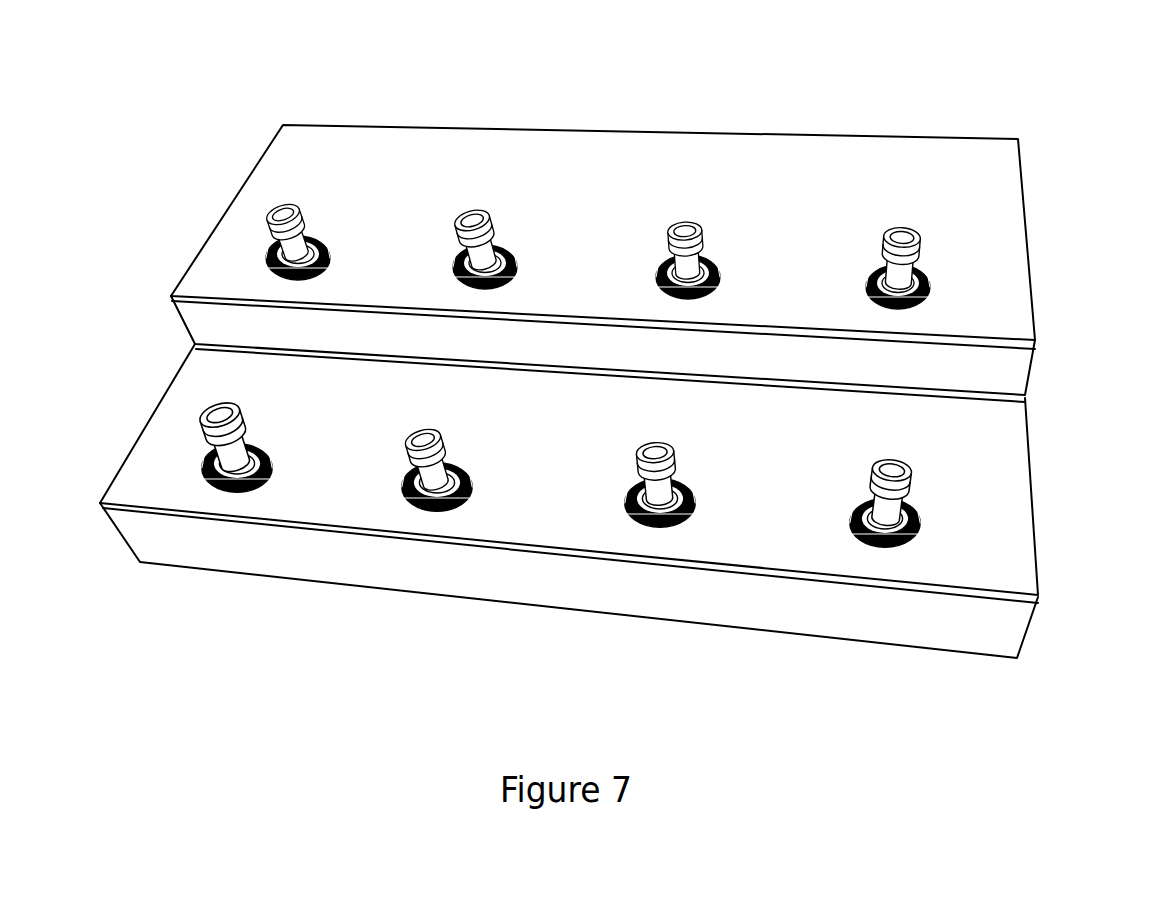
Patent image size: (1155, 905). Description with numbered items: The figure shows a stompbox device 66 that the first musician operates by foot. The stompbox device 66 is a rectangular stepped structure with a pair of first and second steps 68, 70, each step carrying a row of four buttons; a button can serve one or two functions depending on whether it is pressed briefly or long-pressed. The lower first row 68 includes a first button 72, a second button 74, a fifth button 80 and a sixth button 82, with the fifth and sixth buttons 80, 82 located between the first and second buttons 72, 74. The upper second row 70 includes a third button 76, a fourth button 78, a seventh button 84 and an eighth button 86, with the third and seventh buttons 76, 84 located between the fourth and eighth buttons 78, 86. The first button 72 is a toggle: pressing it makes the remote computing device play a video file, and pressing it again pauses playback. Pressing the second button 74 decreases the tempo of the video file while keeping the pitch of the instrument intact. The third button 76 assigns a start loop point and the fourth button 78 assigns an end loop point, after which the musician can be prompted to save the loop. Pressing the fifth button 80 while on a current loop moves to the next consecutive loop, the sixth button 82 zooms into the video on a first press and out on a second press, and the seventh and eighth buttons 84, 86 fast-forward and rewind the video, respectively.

The stompbox device 66 is at (1056, 116).
The first step 68 is at (932, 502).
The second step 70 is at (944, 270).
The first button 72 is at (218, 413).
The second button 74 is at (870, 537).
The third button 76 is at (688, 223).
The fourth button 78 is at (902, 228).
The fifth button 80 is at (407, 487).
The sixth button 82 is at (633, 510).
The seventh button 84 is at (473, 217).
The eighth button 86 is at (280, 212).